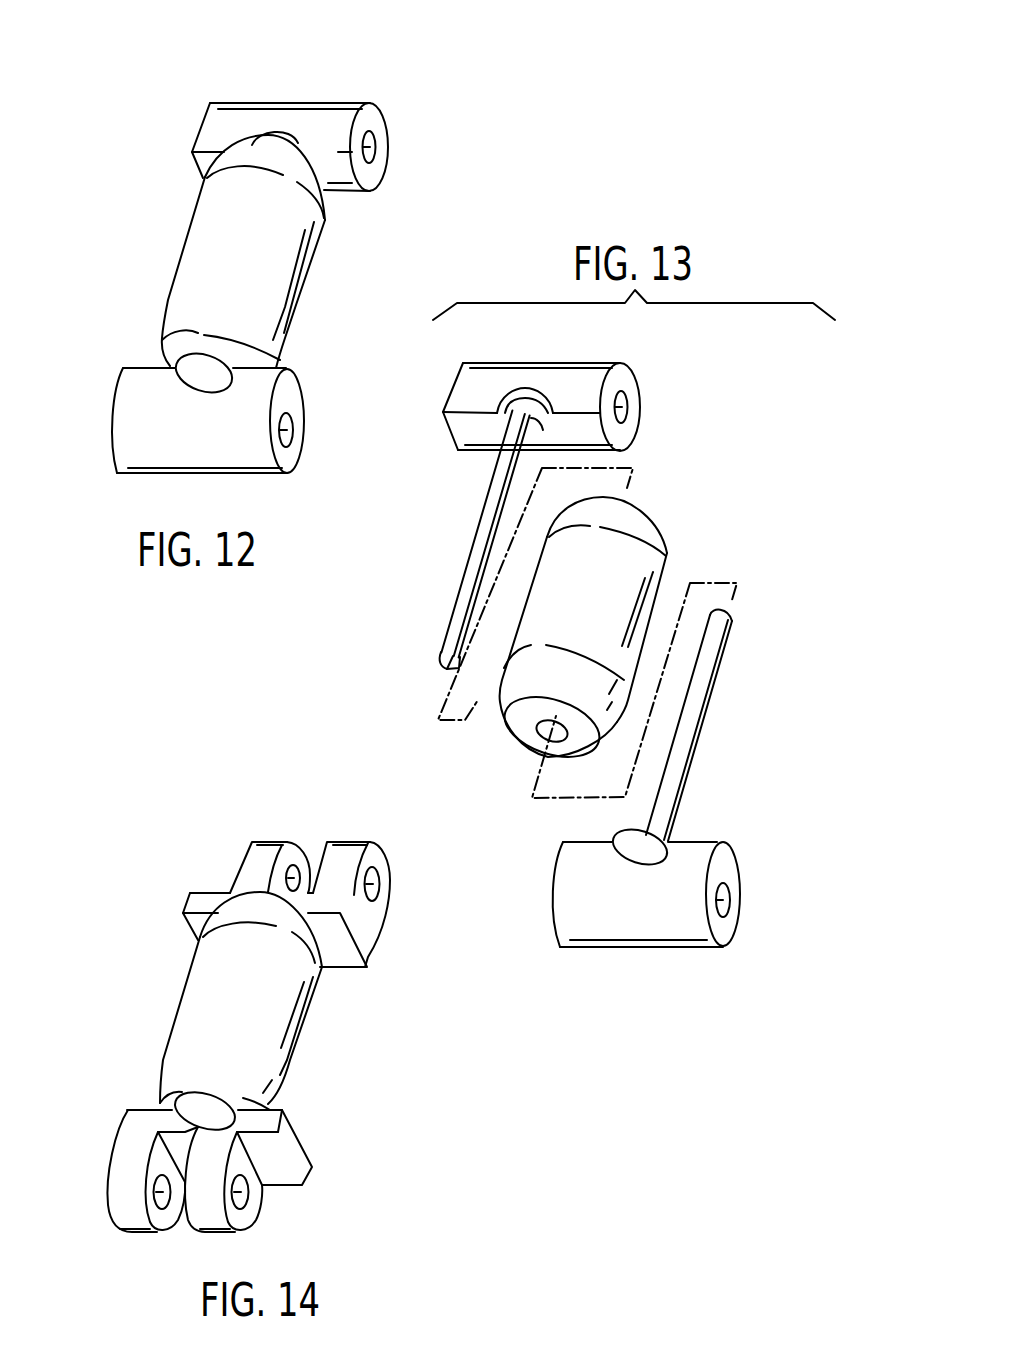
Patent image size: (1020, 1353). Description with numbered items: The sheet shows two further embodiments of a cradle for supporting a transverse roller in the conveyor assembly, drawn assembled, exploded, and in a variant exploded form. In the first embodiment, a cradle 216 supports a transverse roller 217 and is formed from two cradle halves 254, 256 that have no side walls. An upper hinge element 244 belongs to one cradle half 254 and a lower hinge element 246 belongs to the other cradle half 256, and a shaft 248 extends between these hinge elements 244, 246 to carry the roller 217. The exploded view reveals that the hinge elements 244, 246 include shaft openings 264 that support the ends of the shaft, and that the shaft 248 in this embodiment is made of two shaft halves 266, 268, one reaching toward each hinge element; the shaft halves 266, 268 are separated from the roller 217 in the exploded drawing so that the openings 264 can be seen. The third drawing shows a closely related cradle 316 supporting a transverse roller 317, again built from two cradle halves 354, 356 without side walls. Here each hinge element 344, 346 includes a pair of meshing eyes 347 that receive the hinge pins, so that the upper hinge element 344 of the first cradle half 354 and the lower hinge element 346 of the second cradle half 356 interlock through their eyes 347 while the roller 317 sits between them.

In FIG. 12, the cradle 216 is at (228, 82).
In FIG. 13, the cradle 216 is at (664, 489).
In FIG. 12, the transverse roller 217 is at (308, 290).
In FIG. 13, the transverse roller 217 is at (660, 528).
In FIG. 12, the hinge element 244 is at (313, 100).
In FIG. 13, the hinge element 244 is at (610, 363).
In FIG. 12, the hinge element 246 is at (205, 475).
In FIG. 13, the hinge element 246 is at (667, 948).
In FIG. 13, the shaft 248 is at (442, 662).
In FIG. 12, the cradle half 254 is at (152, 118).
In FIG. 13, the cradle half 254 is at (540, 347).
In FIG. 12, the cradle half 256 is at (98, 425).
In FIG. 13, the cradle half 256 is at (619, 966).
In FIG. 13, the shaft opening 264 is at (535, 420).
In FIG. 13, the shaft half 266 is at (713, 707).
In FIG. 13, the shaft half 268 is at (472, 533).
In FIG. 14, the cradle 316 is at (368, 1000).
In FIG. 14, the transverse roller 317 is at (303, 1045).
In FIG. 14, the hinge element 344 is at (367, 965).
In FIG. 14, the hinge element 346 is at (307, 1183).
In FIG. 14, the meshing eyes 347 is at (357, 840).
In FIG. 14, the cradle half 354 is at (402, 853).
In FIG. 14, the cradle half 356 is at (292, 1215).